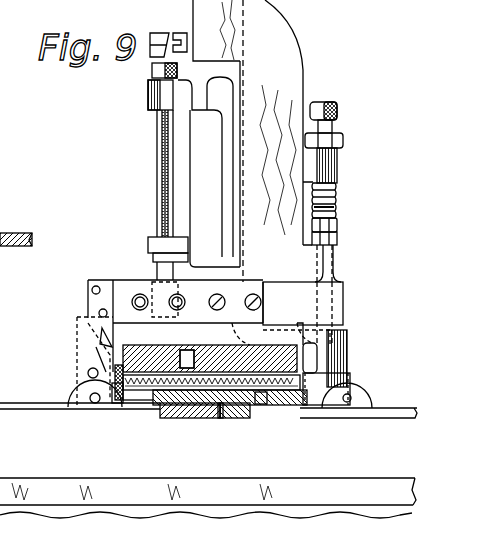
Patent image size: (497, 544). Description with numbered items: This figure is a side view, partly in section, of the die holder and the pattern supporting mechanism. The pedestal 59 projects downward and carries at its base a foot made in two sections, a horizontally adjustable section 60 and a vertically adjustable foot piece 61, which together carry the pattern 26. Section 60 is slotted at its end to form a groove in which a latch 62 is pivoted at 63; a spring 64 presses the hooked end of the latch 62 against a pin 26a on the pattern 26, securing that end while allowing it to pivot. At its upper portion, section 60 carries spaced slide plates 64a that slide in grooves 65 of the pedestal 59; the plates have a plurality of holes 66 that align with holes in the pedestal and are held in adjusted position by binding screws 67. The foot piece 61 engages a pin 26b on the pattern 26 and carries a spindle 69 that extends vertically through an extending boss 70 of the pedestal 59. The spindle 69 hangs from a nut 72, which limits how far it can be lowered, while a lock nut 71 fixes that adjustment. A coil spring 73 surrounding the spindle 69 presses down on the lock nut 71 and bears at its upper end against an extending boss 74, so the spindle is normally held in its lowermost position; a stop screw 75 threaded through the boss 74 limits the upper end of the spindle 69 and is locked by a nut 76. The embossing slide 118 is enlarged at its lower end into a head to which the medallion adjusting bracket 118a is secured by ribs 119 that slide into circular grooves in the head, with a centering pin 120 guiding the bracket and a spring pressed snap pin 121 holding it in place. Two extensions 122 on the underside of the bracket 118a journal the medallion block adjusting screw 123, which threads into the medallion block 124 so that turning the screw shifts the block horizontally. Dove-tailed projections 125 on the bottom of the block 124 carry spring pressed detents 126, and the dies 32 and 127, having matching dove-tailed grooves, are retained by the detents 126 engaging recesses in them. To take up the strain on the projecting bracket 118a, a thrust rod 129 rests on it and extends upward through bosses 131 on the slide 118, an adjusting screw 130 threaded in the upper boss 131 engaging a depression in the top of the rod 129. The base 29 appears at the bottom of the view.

The pedestal 59 is at (300, 50).
The embossing slide 118 is at (207, 90).
The adjusting screw 130 is at (163, 70).
The bosses 131 is at (150, 96).
The thrust rod 129 is at (165, 218).
The slide plates 64a is at (212, 292).
The horizontally adjustable section 60 is at (96, 285).
The holes 66 is at (138, 294).
The spring pressed snap pin 121 is at (208, 296).
The centering pin 120 is at (246, 300).
The binding screws 67 is at (262, 310).
The grooves 65 is at (344, 306).
The extending boss 70 is at (333, 277).
The stop screw 75 is at (340, 113).
The nut 76 is at (343, 144).
The extending boss 74 is at (337, 173).
The coil spring 73 is at (336, 190).
The spindle 69 is at (336, 210).
The lock nut 71 is at (338, 226).
The nut 72 is at (338, 240).
The ribs 119 is at (288, 330).
The medallion adjusting bracket 118a is at (142, 358).
The die 32 is at (165, 412).
The dove-tailed projections 125 is at (182, 410).
The spring pressed detents 126 is at (190, 418).
The die 127 is at (244, 418).
The medallion block 124 is at (222, 418).
The medallion block adjusting screw 123 is at (263, 388).
The vertically adjustable foot piece 61 is at (338, 392).
The pin 26b is at (365, 402).
The pattern 26 is at (35, 405).
The pin 26a is at (94, 404).
The extensions 122 is at (133, 405).
The spring 64 is at (80, 330).
The latch 62 is at (84, 344).
The pivot 63 is at (88, 372).
The base 29 is at (28, 478).